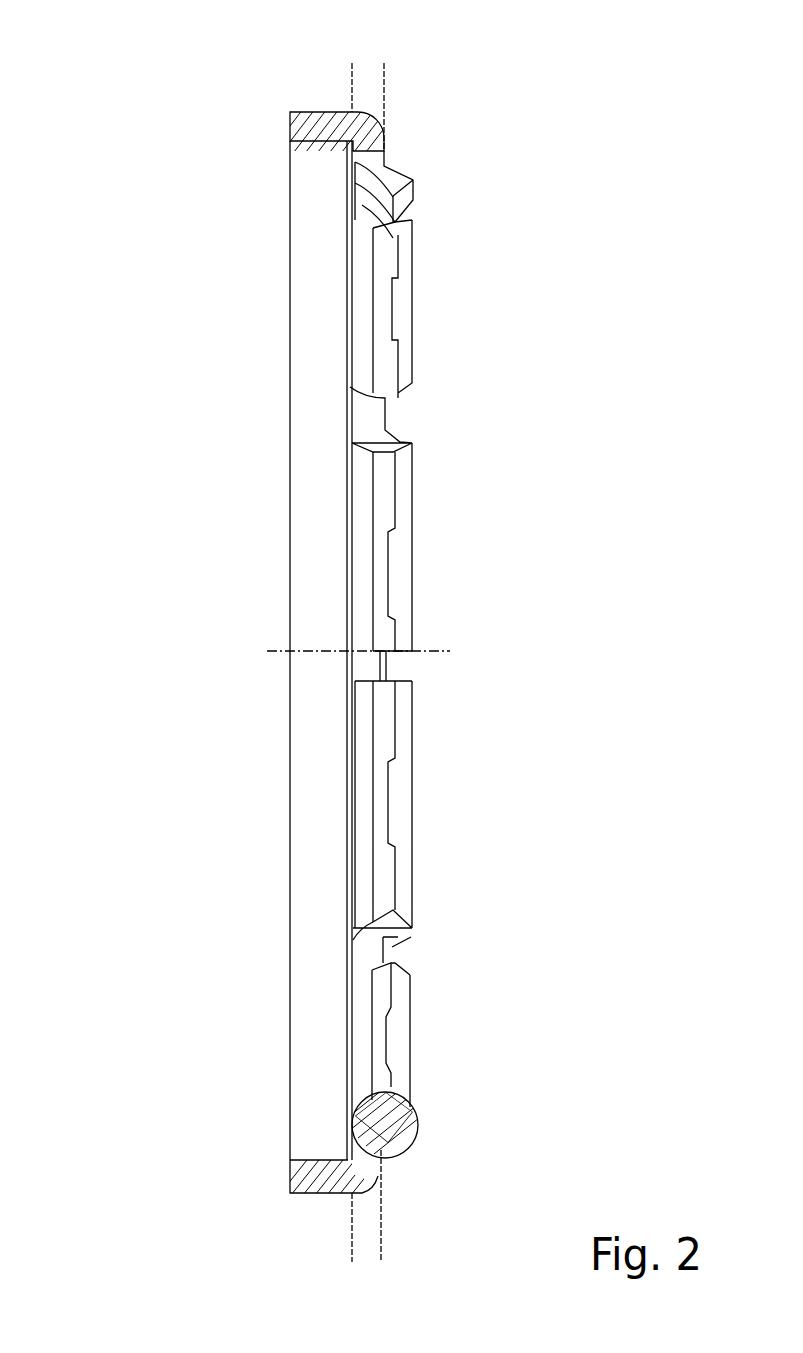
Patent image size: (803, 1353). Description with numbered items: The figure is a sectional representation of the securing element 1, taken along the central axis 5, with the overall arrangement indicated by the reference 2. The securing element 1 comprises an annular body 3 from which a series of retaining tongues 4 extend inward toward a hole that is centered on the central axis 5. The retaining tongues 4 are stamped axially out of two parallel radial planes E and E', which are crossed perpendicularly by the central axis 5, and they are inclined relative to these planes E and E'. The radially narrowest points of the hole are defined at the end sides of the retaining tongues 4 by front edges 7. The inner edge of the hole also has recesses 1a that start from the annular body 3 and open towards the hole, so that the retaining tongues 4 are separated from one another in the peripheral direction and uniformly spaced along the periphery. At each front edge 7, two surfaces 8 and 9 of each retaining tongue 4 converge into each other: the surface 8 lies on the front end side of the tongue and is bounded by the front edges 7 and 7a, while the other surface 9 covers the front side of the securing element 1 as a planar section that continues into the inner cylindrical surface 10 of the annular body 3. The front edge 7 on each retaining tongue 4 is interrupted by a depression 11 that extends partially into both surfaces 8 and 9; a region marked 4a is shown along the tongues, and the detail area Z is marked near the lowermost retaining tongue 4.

The securing element 1 is at (401, 432).
The recesses 1a is at (412, 212).
The spring arrangement 2 is at (140, 63).
The annular body 3 is at (312, 118).
The retaining tongues 4 is at (400, 158).
The groove of spring ring 4a is at (414, 284).
The central axis 5 is at (283, 651).
The front edges 7 is at (416, 190).
The front edge 7a is at (414, 386).
The surface 8 is at (414, 254).
The surface 9 is at (387, 262).
The inner cylindrical surface 10 is at (352, 150).
The depression 11 is at (385, 290).
The radial plane E is at (429, 665).
The radial plane E' is at (299, 663).
The detail region Z is at (395, 1160).